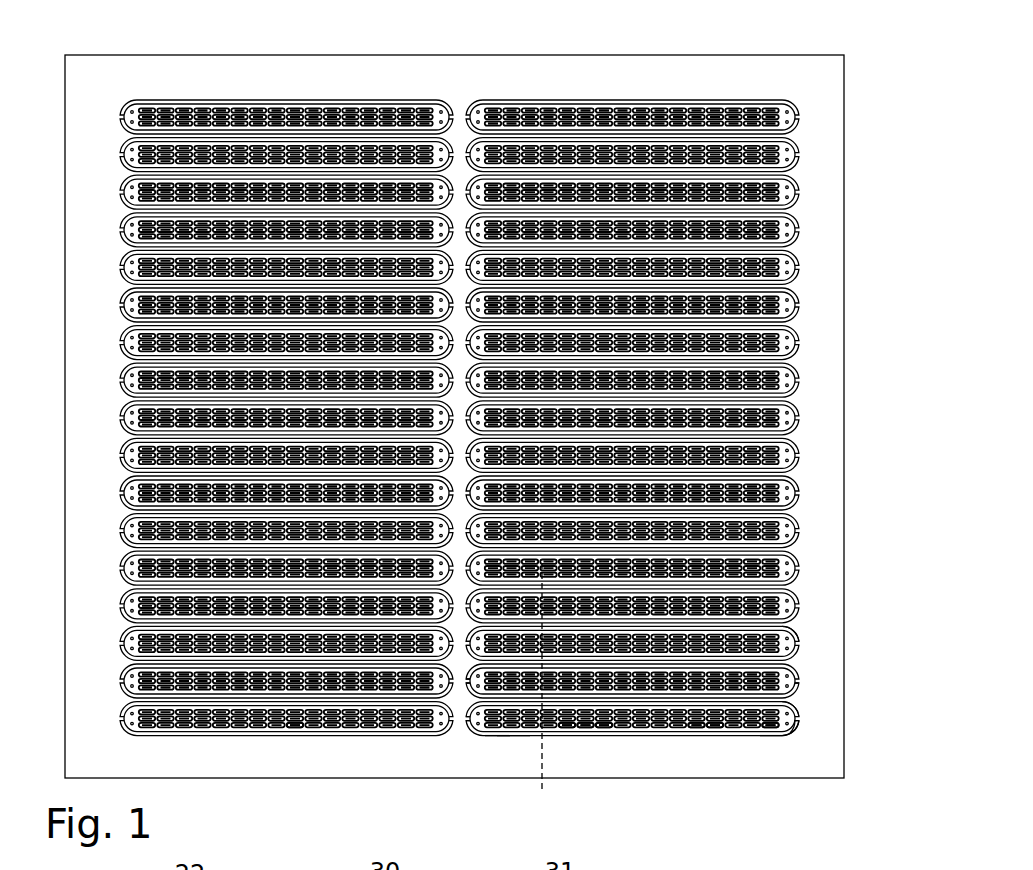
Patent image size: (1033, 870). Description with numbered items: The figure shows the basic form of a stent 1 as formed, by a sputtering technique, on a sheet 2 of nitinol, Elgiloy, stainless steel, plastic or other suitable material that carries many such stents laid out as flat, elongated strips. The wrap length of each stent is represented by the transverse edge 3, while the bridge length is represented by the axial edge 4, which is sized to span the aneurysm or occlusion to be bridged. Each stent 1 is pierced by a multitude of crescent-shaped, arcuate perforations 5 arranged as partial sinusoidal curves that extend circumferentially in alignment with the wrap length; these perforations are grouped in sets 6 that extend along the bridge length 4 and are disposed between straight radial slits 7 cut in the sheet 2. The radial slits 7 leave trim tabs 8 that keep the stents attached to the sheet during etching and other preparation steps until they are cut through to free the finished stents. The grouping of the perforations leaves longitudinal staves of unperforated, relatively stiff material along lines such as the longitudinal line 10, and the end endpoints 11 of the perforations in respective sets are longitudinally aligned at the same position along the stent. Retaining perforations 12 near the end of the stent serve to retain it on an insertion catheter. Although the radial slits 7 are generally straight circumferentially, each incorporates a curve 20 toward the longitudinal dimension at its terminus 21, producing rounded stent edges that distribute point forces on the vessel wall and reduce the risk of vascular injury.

The stent 1 is at (793, 419).
The sheet 2 is at (833, 544).
The transverse edge 3 is at (497, 736).
The axial edge 4 is at (797, 623).
The perforations 5 is at (297, 733).
The sets 6 is at (570, 740).
The radial slits 7 is at (797, 692).
The trim tabs 8 is at (470, 647).
The longitudinal line 10 is at (545, 689).
The end endpoints 11 is at (710, 733).
The retaining perforations 12 is at (794, 736).
The curve 20 is at (800, 730).
The terminus 21 is at (802, 748).